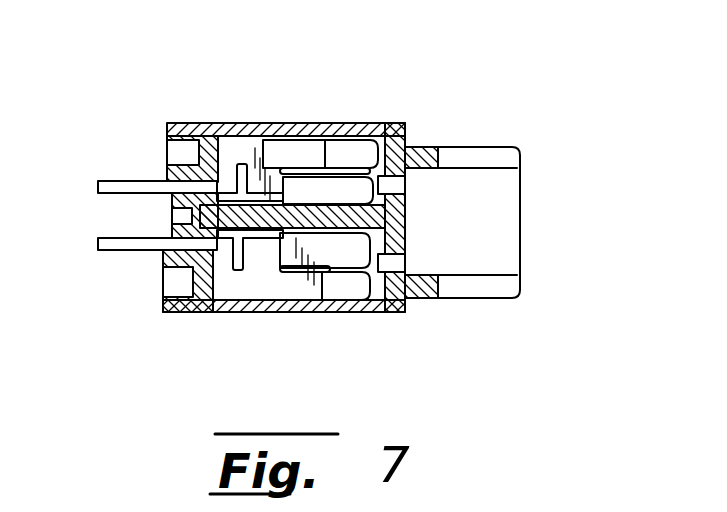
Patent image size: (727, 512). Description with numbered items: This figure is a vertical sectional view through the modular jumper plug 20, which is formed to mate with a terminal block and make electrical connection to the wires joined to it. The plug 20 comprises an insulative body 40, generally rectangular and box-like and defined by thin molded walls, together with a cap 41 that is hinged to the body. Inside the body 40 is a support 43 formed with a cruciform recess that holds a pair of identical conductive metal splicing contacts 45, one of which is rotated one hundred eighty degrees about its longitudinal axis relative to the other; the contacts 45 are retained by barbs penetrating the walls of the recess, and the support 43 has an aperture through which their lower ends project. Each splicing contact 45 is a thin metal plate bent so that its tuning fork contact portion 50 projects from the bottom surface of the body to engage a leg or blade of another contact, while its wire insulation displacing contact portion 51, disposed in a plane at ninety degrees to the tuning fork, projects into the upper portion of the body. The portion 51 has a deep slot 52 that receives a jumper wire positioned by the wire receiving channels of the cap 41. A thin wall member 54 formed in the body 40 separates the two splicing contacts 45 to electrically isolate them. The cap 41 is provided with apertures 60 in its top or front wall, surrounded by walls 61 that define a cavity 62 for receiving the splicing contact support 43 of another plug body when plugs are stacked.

The modular jumper plug 20 is at (424, 58).
The insulative body 40 is at (203, 113).
The cap 41 is at (486, 142).
The support 43 is at (190, 168).
The splicing contact 45 is at (115, 172).
The tuning fork contact portion 50 is at (107, 195).
The wire insulation displacing contact portion 51 is at (346, 288).
The slot 52 is at (336, 148).
The thin wall member 54 is at (290, 205).
The aperture 60 is at (408, 195).
The wall 61 is at (522, 193).
The cavity 62 is at (500, 252).